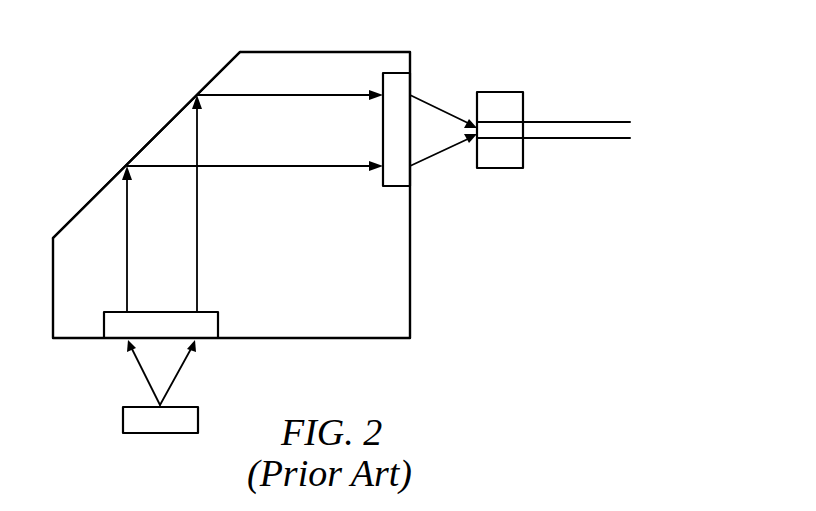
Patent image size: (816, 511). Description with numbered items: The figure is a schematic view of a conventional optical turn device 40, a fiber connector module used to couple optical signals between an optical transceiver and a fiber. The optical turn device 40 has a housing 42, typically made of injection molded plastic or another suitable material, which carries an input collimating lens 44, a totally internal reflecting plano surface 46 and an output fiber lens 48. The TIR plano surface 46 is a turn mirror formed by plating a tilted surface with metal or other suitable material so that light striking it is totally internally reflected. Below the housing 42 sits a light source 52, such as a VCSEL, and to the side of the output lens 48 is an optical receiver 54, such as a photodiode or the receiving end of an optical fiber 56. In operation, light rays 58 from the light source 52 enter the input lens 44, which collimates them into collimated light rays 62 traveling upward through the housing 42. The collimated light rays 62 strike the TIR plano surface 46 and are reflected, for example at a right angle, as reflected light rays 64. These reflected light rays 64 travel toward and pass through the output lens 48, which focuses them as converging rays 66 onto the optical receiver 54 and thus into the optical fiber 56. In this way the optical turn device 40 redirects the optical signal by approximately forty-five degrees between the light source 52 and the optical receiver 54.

The optical turn device 40 is at (90, 72).
The housing 42 is at (396, 298).
The input collimating lens 44 is at (210, 325).
The totally internal reflecting (TIR) plano surface 46 is at (153, 137).
The output fiber lens 48 is at (393, 178).
The light source 52 is at (188, 420).
The optical receiver 54 is at (502, 100).
The optical fiber 56 is at (555, 135).
The light rays 58 is at (148, 387).
The collimated light rays 62 is at (128, 250).
The reflected light rays 64 is at (258, 96).
The focused rays 66 is at (430, 100).